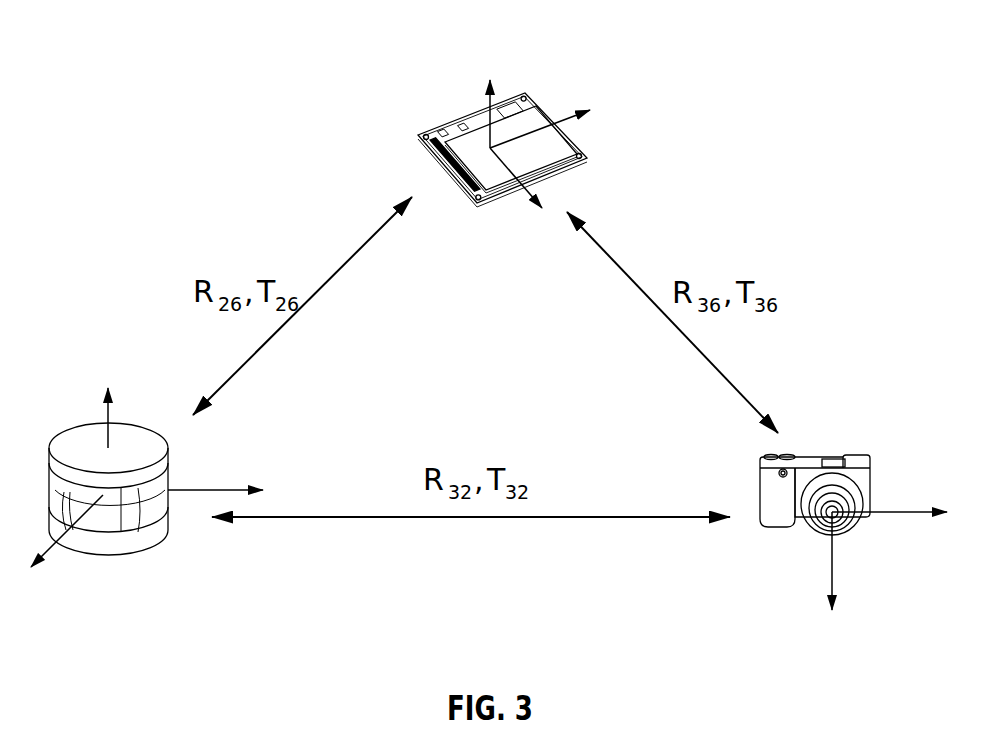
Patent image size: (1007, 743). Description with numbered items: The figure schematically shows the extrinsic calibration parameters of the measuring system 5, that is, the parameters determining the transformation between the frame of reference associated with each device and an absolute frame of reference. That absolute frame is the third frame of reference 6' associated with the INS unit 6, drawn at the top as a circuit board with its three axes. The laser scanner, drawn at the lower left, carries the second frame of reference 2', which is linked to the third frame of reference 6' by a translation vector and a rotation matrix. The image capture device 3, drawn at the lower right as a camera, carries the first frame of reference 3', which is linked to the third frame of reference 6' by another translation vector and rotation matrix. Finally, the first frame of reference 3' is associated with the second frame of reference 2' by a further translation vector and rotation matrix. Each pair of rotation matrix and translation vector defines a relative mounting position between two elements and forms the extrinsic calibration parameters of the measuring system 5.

The measuring system 5 is at (82, 437).
The second frame of reference 2' is at (147, 525).
The INS unit 6 is at (527, 129).
The third frame of reference 6' is at (533, 189).
The image capture device 3 is at (828, 442).
The first frame of reference 3' is at (890, 561).